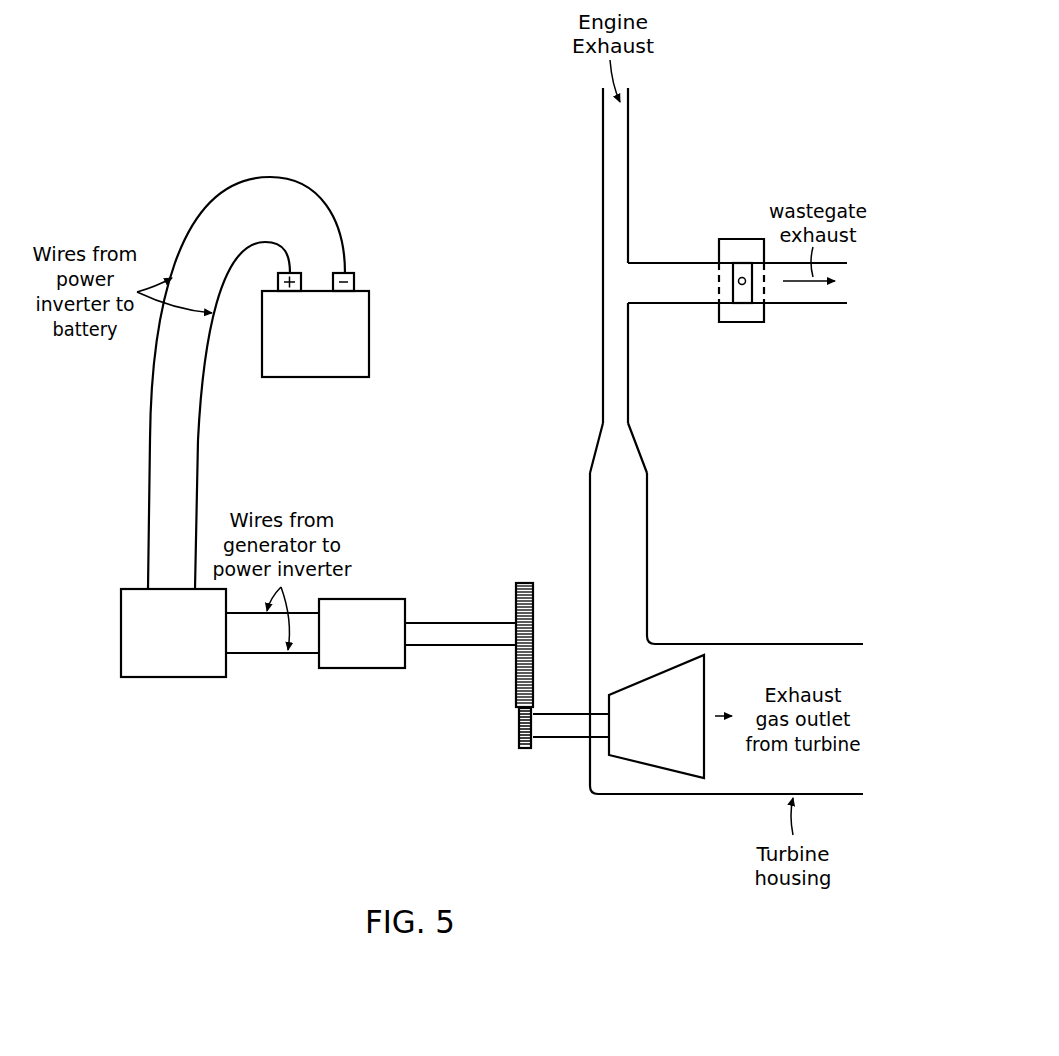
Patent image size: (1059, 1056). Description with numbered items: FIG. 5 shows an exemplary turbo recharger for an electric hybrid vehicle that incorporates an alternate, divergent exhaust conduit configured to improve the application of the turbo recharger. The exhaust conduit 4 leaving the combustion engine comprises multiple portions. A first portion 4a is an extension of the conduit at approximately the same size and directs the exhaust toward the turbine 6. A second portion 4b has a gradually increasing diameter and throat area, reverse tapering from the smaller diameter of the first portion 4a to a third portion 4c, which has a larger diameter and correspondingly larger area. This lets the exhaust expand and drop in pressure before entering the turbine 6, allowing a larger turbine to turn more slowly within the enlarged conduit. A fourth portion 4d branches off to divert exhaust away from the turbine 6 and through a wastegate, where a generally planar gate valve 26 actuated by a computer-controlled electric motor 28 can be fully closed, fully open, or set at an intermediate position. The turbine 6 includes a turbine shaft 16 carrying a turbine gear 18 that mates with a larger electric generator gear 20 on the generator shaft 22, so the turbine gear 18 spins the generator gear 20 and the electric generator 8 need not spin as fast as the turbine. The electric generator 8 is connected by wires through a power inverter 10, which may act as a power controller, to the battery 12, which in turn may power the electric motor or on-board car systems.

The exhaust conduit 4 is at (615, 255).
The first portion 4a is at (631, 388).
The second portion 4b is at (642, 452).
The third portion 4c is at (652, 534).
The fourth portion 4d is at (737, 283).
The turbine 6 is at (670, 774).
The electric generator 8 is at (340, 671).
The power inverter 10 is at (172, 680).
The battery 12 is at (315, 381).
The turbine shaft 16 is at (563, 742).
The turbine gear 18 is at (523, 751).
The electric generator gear 20 is at (523, 581).
The generator shaft 22 is at (441, 619).
The gate valve 26 is at (730, 286).
The electric motor 28 is at (742, 238).